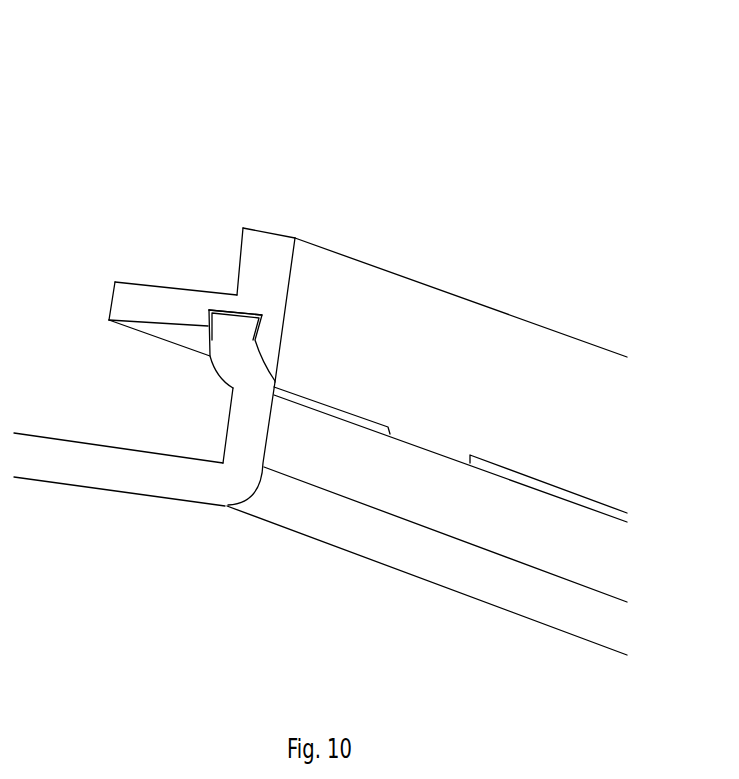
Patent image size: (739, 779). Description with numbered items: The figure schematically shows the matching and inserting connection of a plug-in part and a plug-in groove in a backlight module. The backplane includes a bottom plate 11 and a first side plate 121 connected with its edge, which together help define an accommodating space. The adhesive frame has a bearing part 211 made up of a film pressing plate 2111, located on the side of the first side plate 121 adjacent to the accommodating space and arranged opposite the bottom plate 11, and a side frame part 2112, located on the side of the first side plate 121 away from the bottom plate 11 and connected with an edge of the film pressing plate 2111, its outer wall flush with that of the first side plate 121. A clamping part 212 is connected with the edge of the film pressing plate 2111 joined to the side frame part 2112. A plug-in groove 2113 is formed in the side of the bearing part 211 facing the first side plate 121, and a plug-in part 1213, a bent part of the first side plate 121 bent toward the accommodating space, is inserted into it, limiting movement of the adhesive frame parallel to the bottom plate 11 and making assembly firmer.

The bottom plate 11 is at (135, 478).
The first side plate 121 is at (242, 440).
The plug-in part 1213 is at (238, 333).
The plug-in groove 2113 is at (207, 333).
The bearing part 211 is at (194, 199).
The film pressing plate 2111 is at (172, 313).
The side frame part 2112 is at (270, 275).
The clamping part 212 is at (422, 438).